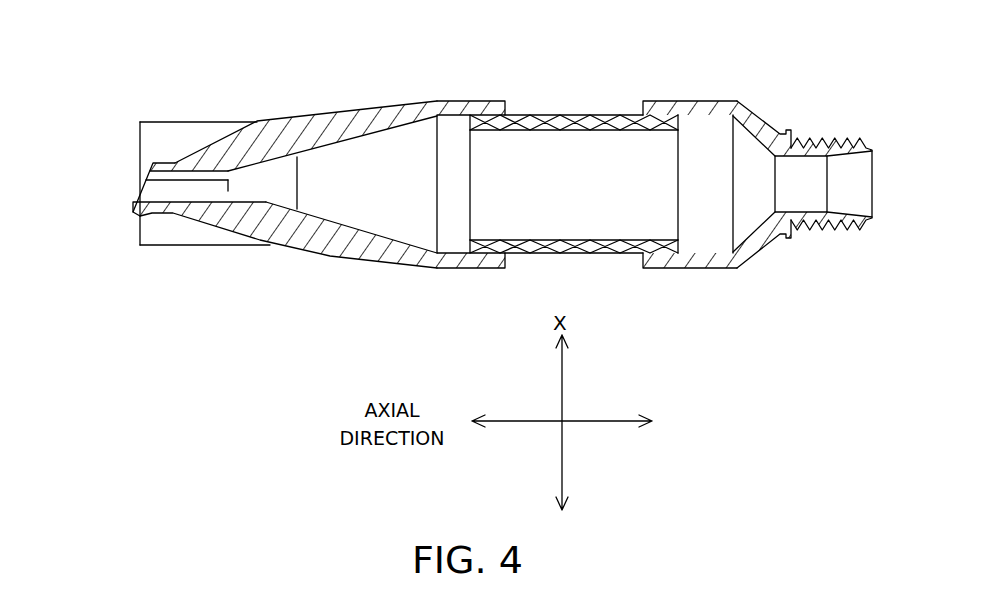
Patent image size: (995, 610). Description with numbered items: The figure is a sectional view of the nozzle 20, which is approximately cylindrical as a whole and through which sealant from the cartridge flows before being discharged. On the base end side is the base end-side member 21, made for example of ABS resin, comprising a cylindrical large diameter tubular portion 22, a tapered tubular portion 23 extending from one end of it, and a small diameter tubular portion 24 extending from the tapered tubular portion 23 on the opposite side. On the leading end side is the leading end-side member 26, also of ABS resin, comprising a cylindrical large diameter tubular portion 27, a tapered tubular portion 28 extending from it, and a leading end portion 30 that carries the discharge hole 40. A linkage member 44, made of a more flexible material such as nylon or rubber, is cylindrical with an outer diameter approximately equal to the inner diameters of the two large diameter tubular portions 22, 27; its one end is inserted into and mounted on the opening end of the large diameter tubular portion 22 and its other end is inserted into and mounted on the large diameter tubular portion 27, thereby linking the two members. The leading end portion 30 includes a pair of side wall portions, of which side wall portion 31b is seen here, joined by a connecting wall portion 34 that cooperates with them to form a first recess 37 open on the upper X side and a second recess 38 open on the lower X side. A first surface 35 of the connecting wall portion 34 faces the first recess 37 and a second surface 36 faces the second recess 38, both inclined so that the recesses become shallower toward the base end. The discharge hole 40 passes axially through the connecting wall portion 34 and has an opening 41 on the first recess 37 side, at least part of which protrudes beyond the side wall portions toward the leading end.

The nozzle 20 is at (633, 70).
The base end-side member 21 is at (796, 97).
The large diameter tubular portion 22 is at (693, 108).
The tapered tubular portion 23 is at (752, 125).
The small diameter tubular portion 24 is at (842, 145).
The leading end-side member 26 is at (399, 96).
The large diameter tubular portion 27 is at (466, 103).
The tapered tubular portion 28 is at (358, 125).
The leading end portion 30 is at (234, 97).
The side wall portion 31b is at (149, 140).
The connecting wall portion 34 is at (138, 205).
The first surface 35 is at (213, 150).
The second surface 36 is at (220, 237).
The first recess 37 is at (168, 144).
The second recess 38 is at (184, 229).
The discharge hole 40 is at (180, 201).
The opening 41 is at (138, 197).
The linkage member 44 is at (573, 122).